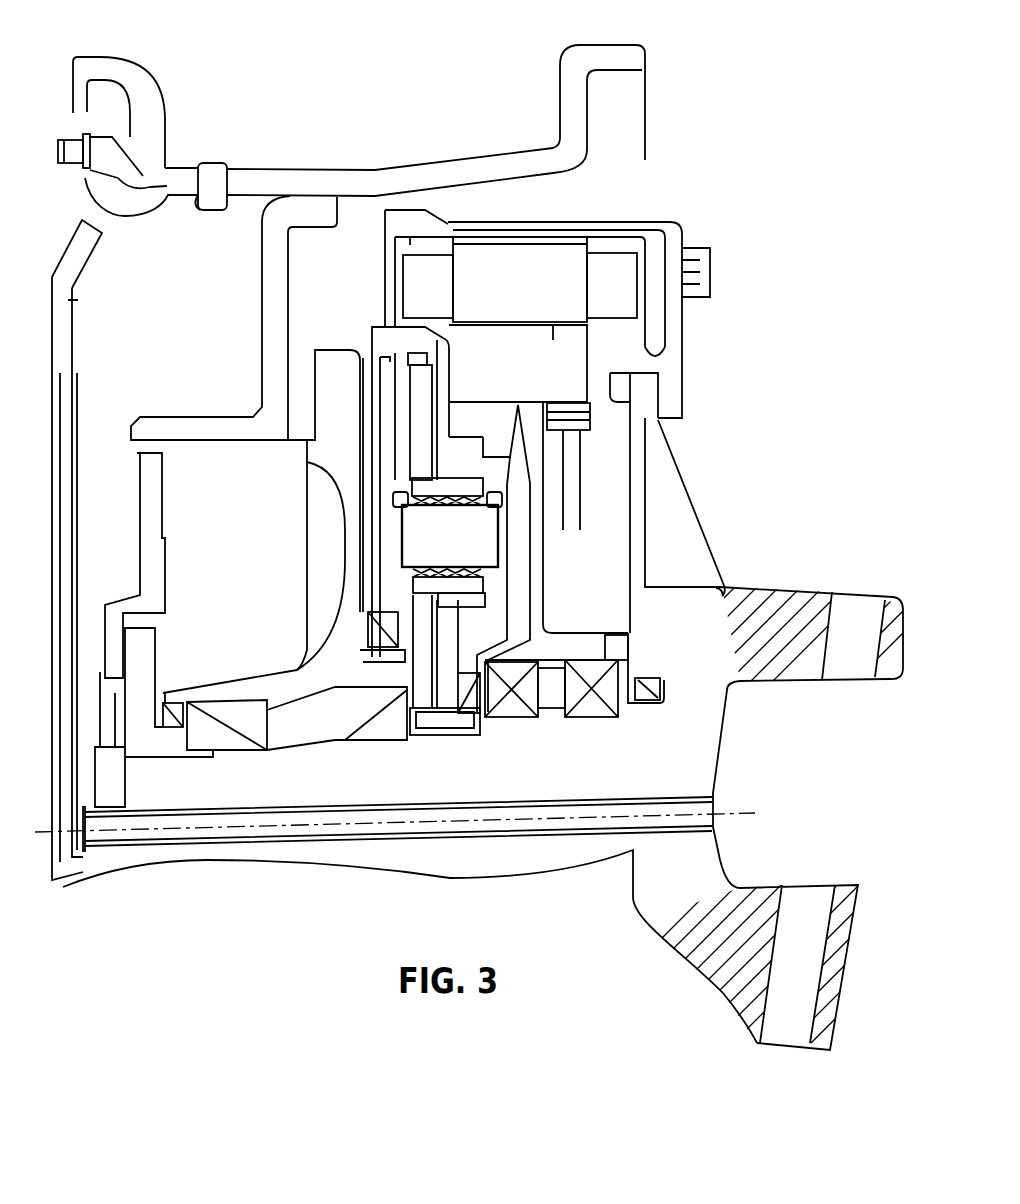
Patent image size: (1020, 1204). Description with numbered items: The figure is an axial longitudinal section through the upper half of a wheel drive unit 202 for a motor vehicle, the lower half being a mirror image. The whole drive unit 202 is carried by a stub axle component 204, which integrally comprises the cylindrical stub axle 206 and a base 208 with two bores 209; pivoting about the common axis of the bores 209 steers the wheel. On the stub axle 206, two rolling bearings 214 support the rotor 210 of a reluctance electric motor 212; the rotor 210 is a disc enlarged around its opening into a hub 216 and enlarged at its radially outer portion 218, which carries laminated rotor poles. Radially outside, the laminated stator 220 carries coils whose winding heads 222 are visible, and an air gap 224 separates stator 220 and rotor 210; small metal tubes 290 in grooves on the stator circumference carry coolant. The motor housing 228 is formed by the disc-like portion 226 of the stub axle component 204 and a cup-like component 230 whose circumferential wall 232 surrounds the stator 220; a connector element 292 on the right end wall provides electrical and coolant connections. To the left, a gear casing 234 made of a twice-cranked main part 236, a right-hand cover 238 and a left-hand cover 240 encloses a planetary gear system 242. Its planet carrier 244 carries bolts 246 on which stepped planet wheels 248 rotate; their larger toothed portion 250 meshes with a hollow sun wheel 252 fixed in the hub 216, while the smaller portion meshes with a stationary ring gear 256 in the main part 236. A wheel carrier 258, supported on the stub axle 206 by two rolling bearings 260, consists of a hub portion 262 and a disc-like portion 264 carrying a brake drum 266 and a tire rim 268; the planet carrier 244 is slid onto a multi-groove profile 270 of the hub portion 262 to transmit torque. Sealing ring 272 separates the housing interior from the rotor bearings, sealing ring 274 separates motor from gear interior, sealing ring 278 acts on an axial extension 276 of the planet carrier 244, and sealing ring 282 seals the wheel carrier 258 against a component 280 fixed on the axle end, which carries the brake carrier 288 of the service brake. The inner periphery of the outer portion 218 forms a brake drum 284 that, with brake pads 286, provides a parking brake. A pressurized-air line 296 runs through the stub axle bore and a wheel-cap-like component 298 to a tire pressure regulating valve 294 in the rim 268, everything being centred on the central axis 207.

The drive unit 202 is at (816, 127).
The stub axle component 204 is at (790, 545).
The stub axle 206 is at (672, 759).
The central axis 207 is at (745, 825).
The base 208 is at (724, 588).
The bores 209 is at (865, 604).
The rotor 210 is at (548, 548).
The electric motor 212 is at (683, 357).
The rolling bearings 214 is at (590, 713).
The hub 216 is at (570, 632).
The radially outer portion 218 is at (638, 347).
The stator 220 is at (565, 285).
The winding heads 222 is at (438, 296).
The air gap 224 is at (550, 328).
The disc-like portion 226 is at (658, 455).
The motor housing 228 is at (684, 326).
The cup-like component 230 is at (667, 223).
The circumferential wall 232 is at (580, 228).
The gear casing 234 is at (378, 309).
The main part 236 is at (443, 386).
The cover-like component 238 is at (524, 430).
The cover-like component 240 is at (381, 478).
The planetary gear system 242 is at (406, 478).
The planet carrier 244 is at (400, 580).
The bolts 246 is at (400, 552).
The stepped planet wheel 248 is at (410, 421).
The toothed portion 250 is at (410, 361).
The sun wheel 252 is at (426, 724).
The ring gear 256 is at (462, 465).
The wheel carrier 258 is at (320, 636).
The rolling bearings 260 is at (360, 722).
The hub portion 262 is at (288, 703).
The disc-like portion 264 is at (322, 540).
The brake drum 266 is at (210, 425).
The tire rim 268 is at (284, 165).
The multi-groove profile 270 is at (375, 667).
The sealing ring 272 is at (650, 688).
The sealing ring 274 is at (470, 715).
The axial extension 276 is at (320, 652).
The sealing ring 278 is at (326, 618).
The component 280 is at (145, 672).
The sealing ring 282 is at (168, 716).
The brake drum 284 is at (576, 404).
The brake pads 286 is at (583, 440).
The brake carrier 288 is at (148, 517).
The metal tube 290 is at (489, 240).
The connector element 292 is at (711, 270).
The tire pressure regulating valve 294 is at (210, 165).
The pressurized-air line 296 is at (152, 845).
The wheel-cap-like component 298 is at (73, 342).